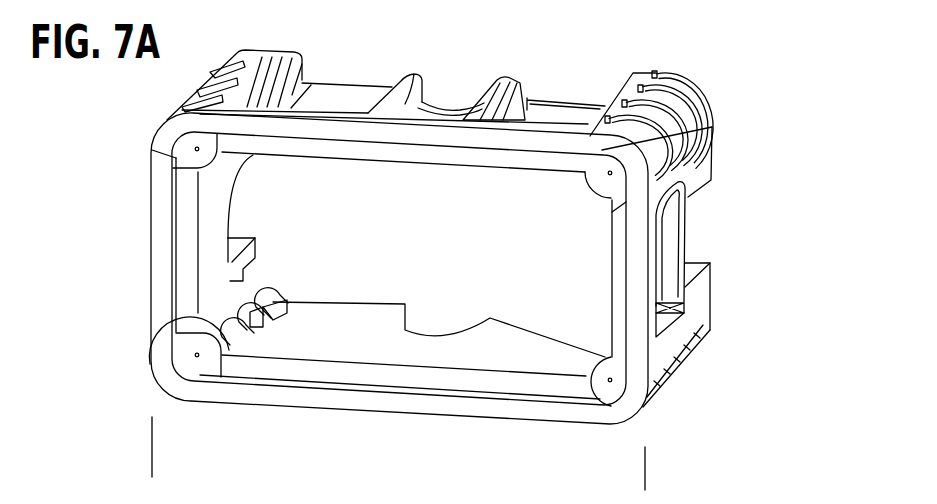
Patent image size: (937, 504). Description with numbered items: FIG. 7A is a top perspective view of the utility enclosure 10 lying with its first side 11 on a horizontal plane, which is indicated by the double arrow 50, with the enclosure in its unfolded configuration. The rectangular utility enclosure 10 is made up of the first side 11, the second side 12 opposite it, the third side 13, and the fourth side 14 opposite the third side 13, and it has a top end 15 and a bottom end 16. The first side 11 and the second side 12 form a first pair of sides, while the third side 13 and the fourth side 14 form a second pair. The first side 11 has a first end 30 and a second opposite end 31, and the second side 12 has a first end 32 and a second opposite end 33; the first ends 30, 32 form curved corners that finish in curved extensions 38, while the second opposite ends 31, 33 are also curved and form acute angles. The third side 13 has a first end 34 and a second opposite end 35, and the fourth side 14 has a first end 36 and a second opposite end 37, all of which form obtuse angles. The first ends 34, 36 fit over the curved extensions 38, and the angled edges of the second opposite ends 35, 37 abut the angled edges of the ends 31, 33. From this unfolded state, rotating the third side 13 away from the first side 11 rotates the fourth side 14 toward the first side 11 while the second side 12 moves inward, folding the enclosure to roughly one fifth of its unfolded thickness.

The utility enclosure 10 is at (707, 69).
The first side 11 is at (352, 328).
The second side 12 is at (350, 105).
The third side 13 is at (214, 220).
The fourth side 14 is at (702, 297).
The top end 15 is at (452, 408).
The bottom end 16 is at (282, 57).
The first end of first side 30 is at (161, 378).
The second opposite end of first side 31 is at (646, 423).
The first end of second side 32 is at (620, 174).
The second opposite end of second side 33 is at (143, 128).
The first end of third side 34 is at (149, 319).
The second opposite end of third side 35 is at (149, 177).
The first end of fourth side 36 is at (628, 237).
The second opposite end of fourth side 37 is at (657, 354).
The curved extension 38 is at (167, 346).
The double arrow 50 is at (645, 473).